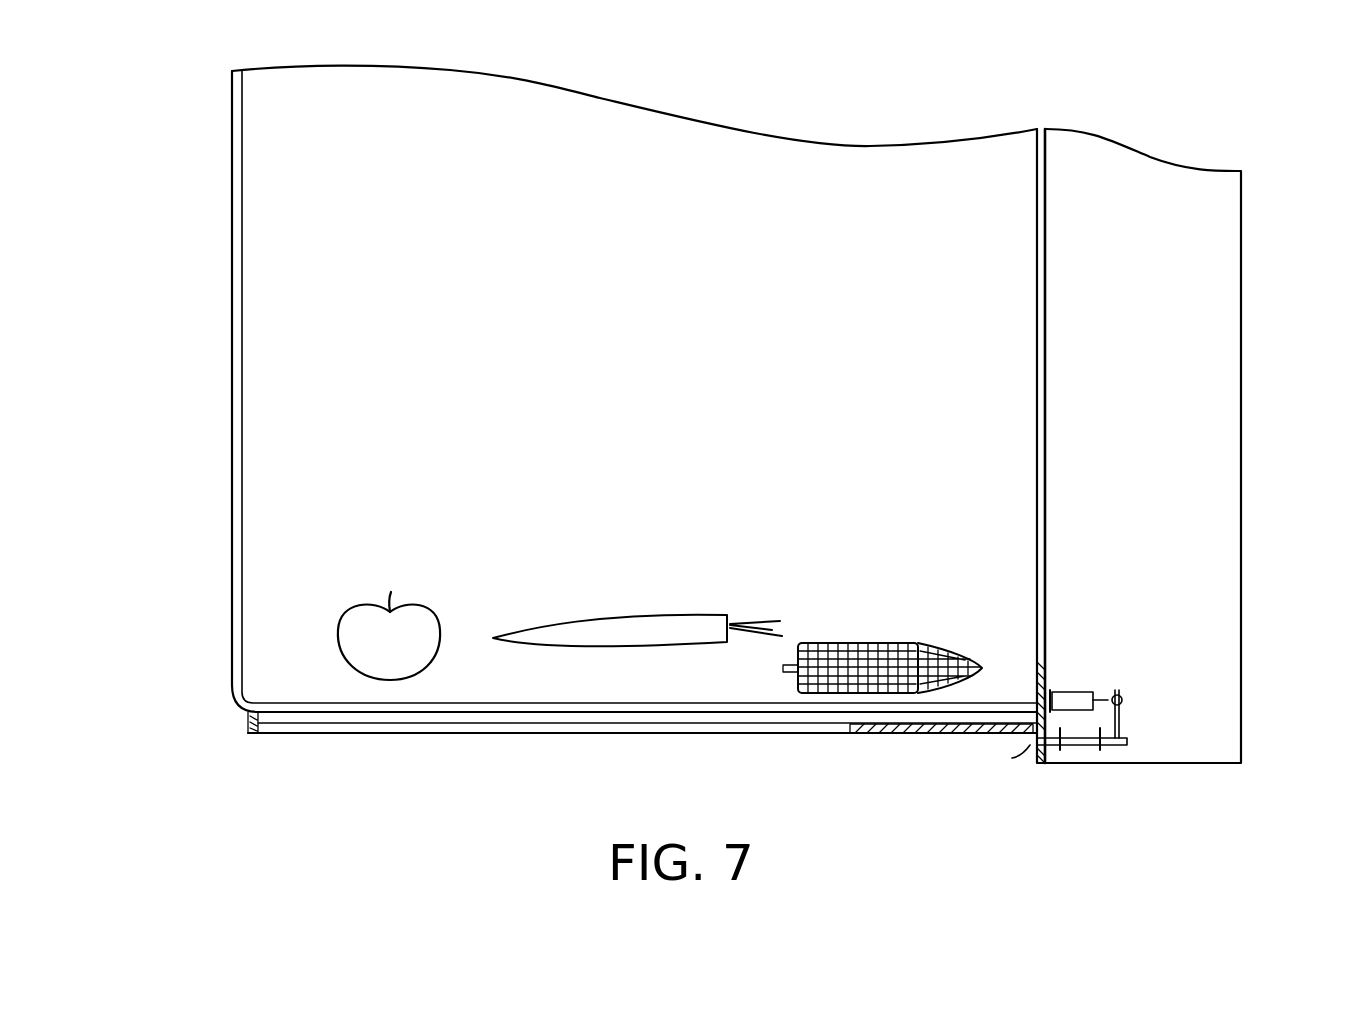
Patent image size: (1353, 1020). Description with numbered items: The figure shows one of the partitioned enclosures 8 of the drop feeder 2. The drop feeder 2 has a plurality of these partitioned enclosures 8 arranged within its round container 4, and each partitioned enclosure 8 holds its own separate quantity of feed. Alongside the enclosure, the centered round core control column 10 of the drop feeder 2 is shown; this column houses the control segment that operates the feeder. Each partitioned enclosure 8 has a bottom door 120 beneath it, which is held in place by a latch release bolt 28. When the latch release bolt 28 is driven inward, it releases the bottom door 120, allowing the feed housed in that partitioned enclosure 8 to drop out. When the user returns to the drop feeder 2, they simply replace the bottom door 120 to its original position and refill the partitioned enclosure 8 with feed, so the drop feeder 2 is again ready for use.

The drop feeder 2 is at (188, 463).
The round container 4 is at (230, 568).
The partitioned enclosure 8 is at (315, 233).
The centered round core control column 10 is at (1207, 353).
The bottom door 120 is at (563, 712).
The latch release bolt 28 is at (1037, 740).